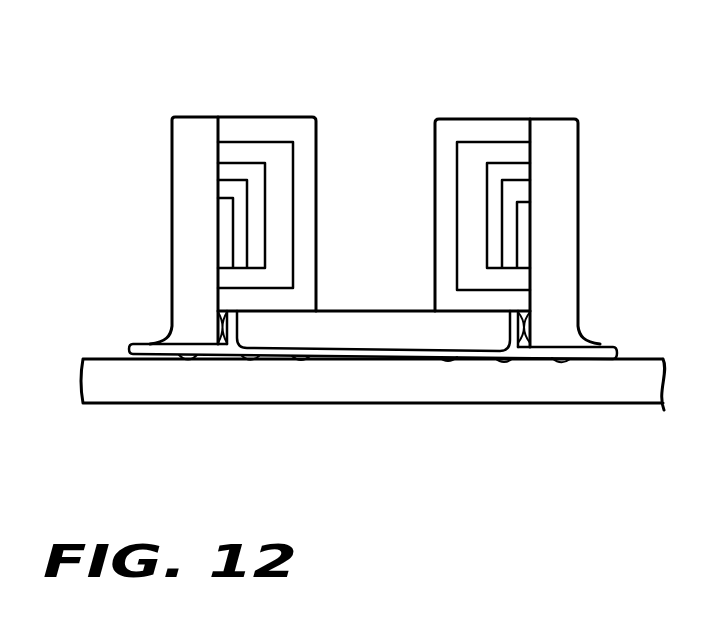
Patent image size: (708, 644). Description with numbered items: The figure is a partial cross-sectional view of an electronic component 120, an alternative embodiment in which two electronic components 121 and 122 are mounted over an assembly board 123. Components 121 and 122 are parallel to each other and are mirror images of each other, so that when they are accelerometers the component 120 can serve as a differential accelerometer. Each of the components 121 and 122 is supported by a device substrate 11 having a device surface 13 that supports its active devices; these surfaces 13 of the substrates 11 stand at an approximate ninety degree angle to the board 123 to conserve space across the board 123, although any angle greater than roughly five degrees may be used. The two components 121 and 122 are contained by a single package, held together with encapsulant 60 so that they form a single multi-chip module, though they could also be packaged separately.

The device substrate 11 is at (567, 222).
The device surface 13 is at (530, 152).
The encapsulant 60 is at (372, 318).
The electronic component 120 is at (373, 272).
The component 121 is at (208, 93).
The component 122 is at (538, 192).
The assembly board 123 is at (470, 395).